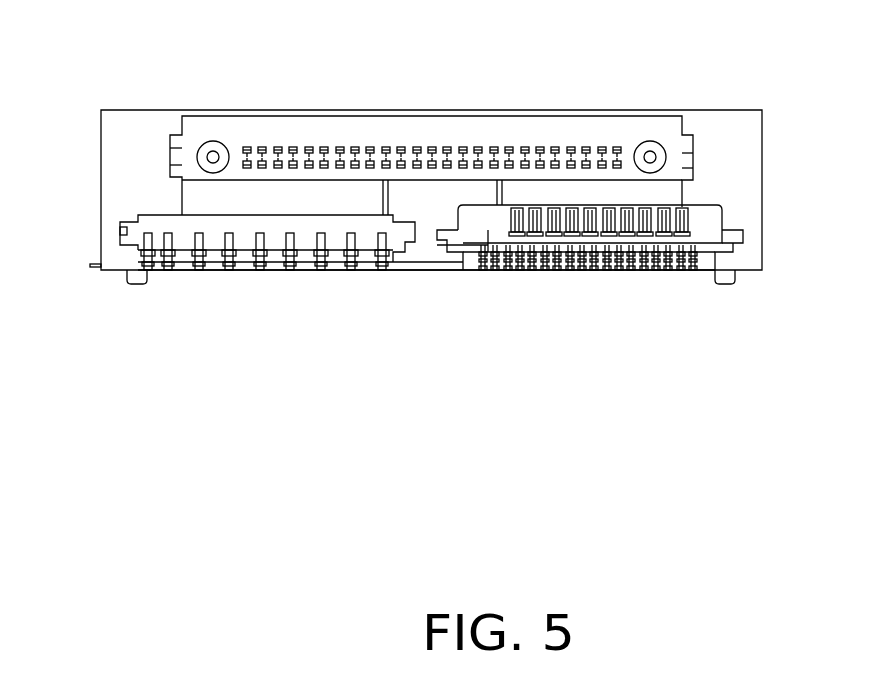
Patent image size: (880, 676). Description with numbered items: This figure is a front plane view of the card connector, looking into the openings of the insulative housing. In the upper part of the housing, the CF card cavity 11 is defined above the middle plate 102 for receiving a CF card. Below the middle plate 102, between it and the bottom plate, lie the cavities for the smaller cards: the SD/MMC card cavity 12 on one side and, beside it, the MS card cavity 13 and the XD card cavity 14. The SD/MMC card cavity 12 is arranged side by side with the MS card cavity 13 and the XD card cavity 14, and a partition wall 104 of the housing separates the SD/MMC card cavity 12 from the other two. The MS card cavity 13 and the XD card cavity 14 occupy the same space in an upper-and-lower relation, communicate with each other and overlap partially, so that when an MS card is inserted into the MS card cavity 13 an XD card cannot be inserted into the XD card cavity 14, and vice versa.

The CF card cavity 11 is at (250, 132).
The SD/MMC card cavity 12 is at (180, 212).
The MS card cavity 13 is at (707, 218).
The XD card cavity 14 is at (727, 238).
The middle plate 102 is at (329, 212).
The partition wall 104 is at (423, 252).